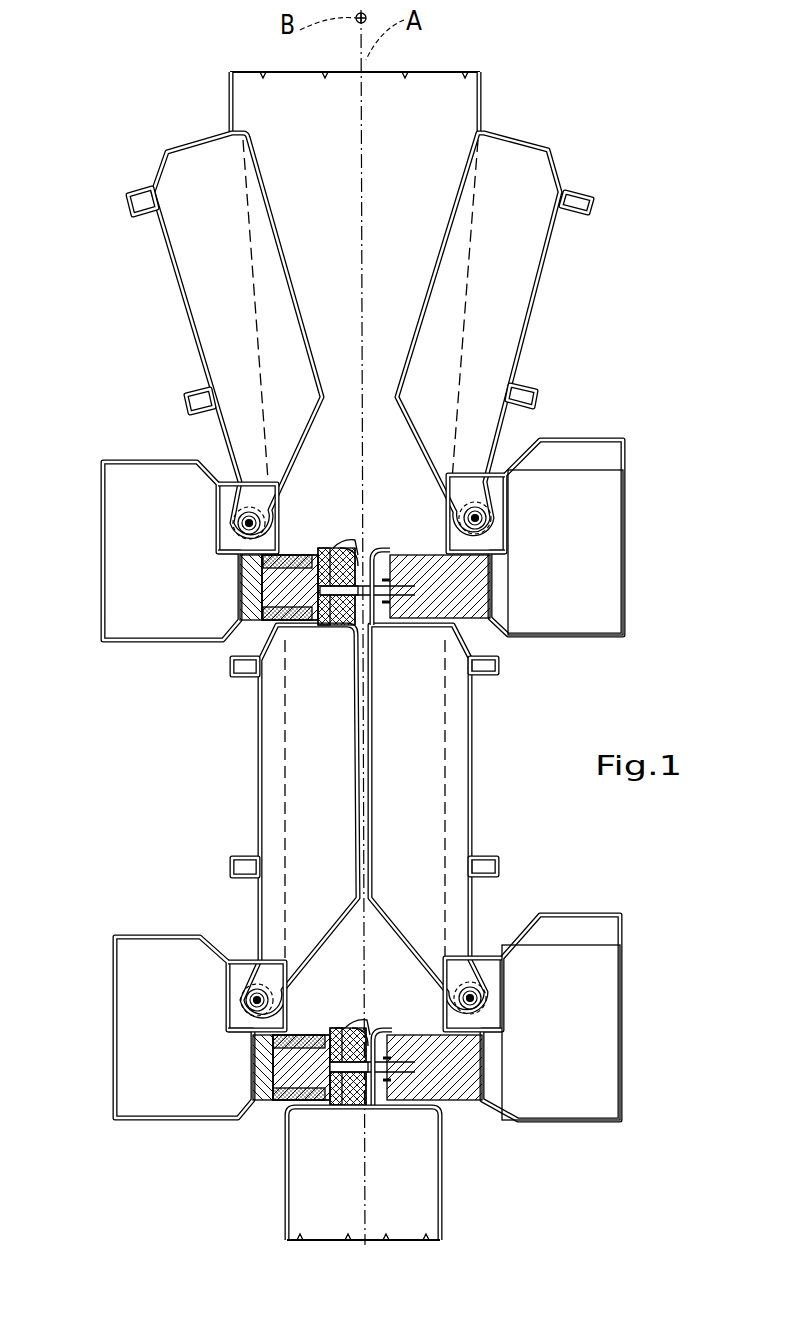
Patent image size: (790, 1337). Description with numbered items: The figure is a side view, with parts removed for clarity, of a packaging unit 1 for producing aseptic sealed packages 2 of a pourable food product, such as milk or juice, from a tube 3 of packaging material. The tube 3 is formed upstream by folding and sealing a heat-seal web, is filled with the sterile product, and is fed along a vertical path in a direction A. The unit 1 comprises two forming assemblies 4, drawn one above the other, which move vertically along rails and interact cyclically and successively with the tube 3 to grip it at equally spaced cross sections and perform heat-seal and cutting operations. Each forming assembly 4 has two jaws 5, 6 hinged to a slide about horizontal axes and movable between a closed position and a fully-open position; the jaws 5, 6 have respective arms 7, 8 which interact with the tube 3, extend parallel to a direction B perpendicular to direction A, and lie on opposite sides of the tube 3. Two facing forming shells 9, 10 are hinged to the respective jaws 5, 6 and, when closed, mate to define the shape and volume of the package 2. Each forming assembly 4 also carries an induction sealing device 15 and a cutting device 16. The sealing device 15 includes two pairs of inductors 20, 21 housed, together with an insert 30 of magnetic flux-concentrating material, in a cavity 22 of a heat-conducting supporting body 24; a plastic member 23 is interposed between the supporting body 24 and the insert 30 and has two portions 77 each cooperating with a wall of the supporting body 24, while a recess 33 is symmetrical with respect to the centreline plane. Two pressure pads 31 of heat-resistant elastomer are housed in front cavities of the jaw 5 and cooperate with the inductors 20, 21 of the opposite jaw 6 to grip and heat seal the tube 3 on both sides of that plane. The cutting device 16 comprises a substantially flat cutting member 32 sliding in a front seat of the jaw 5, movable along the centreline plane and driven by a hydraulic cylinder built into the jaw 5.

The packaging unit 1 is at (600, 325).
The sealed package 2 is at (413, 1162).
The tube of packaging material 3 is at (450, 123).
The forming assembly 4 is at (540, 425).
The jaw 5 is at (640, 465).
The jaw 6 is at (100, 525).
The arm 7 is at (590, 610).
The arm 8 is at (112, 605).
The forming shell 9 is at (512, 185).
The forming shell 10 is at (205, 185).
The induction sealing device 15 is at (270, 590).
The cutting device 16 is at (470, 618).
The inductor 20 is at (333, 548).
The inductor 21 is at (350, 548).
The cavity 22 is at (345, 1028).
The member 23 is at (355, 626).
The supporting body 24 is at (320, 625).
The insert 30 is at (343, 548).
The pressure pad 31 is at (385, 550).
The cutting member 32 is at (395, 626).
The recess 33 is at (348, 540).
The portion 77 is at (262, 562).